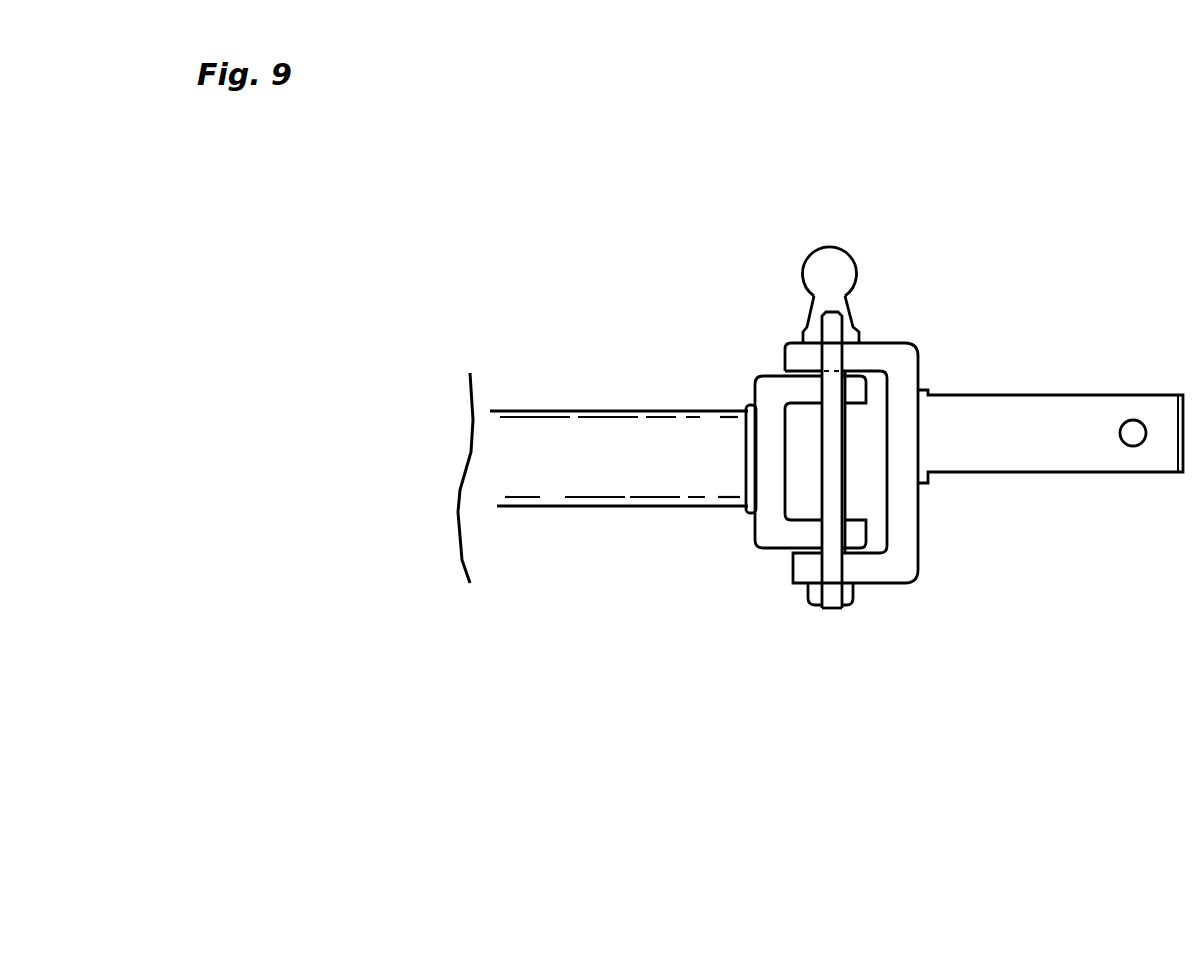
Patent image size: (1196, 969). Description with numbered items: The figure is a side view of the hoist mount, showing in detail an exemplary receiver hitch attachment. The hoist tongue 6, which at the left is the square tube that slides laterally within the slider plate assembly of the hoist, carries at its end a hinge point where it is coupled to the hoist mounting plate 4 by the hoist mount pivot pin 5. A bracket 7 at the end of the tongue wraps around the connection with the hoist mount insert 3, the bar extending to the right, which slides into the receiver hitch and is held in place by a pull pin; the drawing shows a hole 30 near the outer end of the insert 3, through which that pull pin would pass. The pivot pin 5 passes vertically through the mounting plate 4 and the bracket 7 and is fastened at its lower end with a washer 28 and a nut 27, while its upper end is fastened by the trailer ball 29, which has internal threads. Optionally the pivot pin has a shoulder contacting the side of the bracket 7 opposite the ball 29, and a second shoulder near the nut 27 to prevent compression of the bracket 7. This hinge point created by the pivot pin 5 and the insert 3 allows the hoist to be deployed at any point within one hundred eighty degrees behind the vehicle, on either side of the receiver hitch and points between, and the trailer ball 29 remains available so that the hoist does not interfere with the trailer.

The hoist mount insert 3 is at (1045, 395).
The hoist mounting plate 4 is at (757, 373).
The hoist mount pivot pin 5 is at (830, 613).
The hoist tongue 6 is at (547, 411).
The bracket 7 is at (917, 580).
The nut 27 is at (852, 612).
The washer 28 is at (807, 583).
The trailer ball 29 is at (850, 247).
The hole 30 is at (1136, 447).